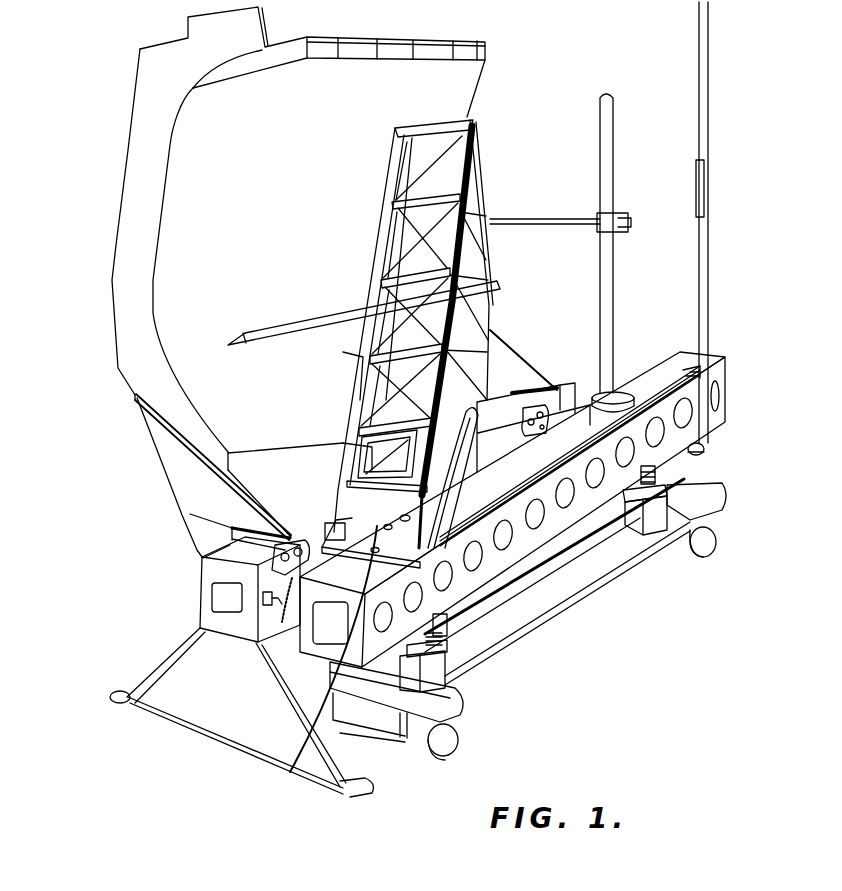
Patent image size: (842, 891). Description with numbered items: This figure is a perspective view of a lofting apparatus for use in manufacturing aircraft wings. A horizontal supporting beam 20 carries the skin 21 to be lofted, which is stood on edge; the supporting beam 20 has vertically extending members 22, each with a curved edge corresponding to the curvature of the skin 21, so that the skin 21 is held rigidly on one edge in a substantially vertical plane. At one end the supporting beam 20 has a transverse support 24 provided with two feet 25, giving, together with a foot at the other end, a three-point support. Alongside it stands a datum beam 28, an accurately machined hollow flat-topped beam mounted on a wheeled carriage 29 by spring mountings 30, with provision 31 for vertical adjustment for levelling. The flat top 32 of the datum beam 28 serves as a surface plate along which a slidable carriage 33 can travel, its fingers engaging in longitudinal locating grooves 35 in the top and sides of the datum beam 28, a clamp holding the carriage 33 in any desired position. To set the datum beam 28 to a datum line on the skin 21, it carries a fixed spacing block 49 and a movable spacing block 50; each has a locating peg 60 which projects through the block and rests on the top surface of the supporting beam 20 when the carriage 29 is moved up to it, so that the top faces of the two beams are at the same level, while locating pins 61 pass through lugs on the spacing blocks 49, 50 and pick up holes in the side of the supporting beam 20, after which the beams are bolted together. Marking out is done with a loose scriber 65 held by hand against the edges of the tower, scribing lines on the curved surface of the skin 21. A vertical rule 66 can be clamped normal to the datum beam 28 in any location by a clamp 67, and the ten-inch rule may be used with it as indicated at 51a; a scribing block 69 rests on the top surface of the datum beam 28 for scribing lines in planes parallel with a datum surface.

The supporting beam 20 is at (202, 563).
The skin 21 is at (185, 146).
The vertically extending members 22 is at (125, 300).
The transverse support 24 is at (200, 705).
The feet 25 is at (110, 700).
The datum beam 28 is at (667, 450).
The wheeled carriage 29 is at (600, 582).
The spring mountings 30 is at (702, 485).
The provision for vertical adjustment 31 is at (637, 530).
The flat top 32 is at (658, 378).
The slidable carriage 33 is at (463, 703).
The longitudinal locating grooves 35 is at (326, 660).
The fixed spacing block 49 is at (268, 573).
The movable spacing block 50 is at (520, 412).
The rule 51a is at (706, 172).
The locating peg 60 is at (290, 535).
The locating pins 61 is at (262, 613).
The loose scriber 65 is at (300, 330).
The vertical rule 66 is at (707, 275).
The clamp 67 is at (705, 452).
The scribing block 69 is at (600, 127).